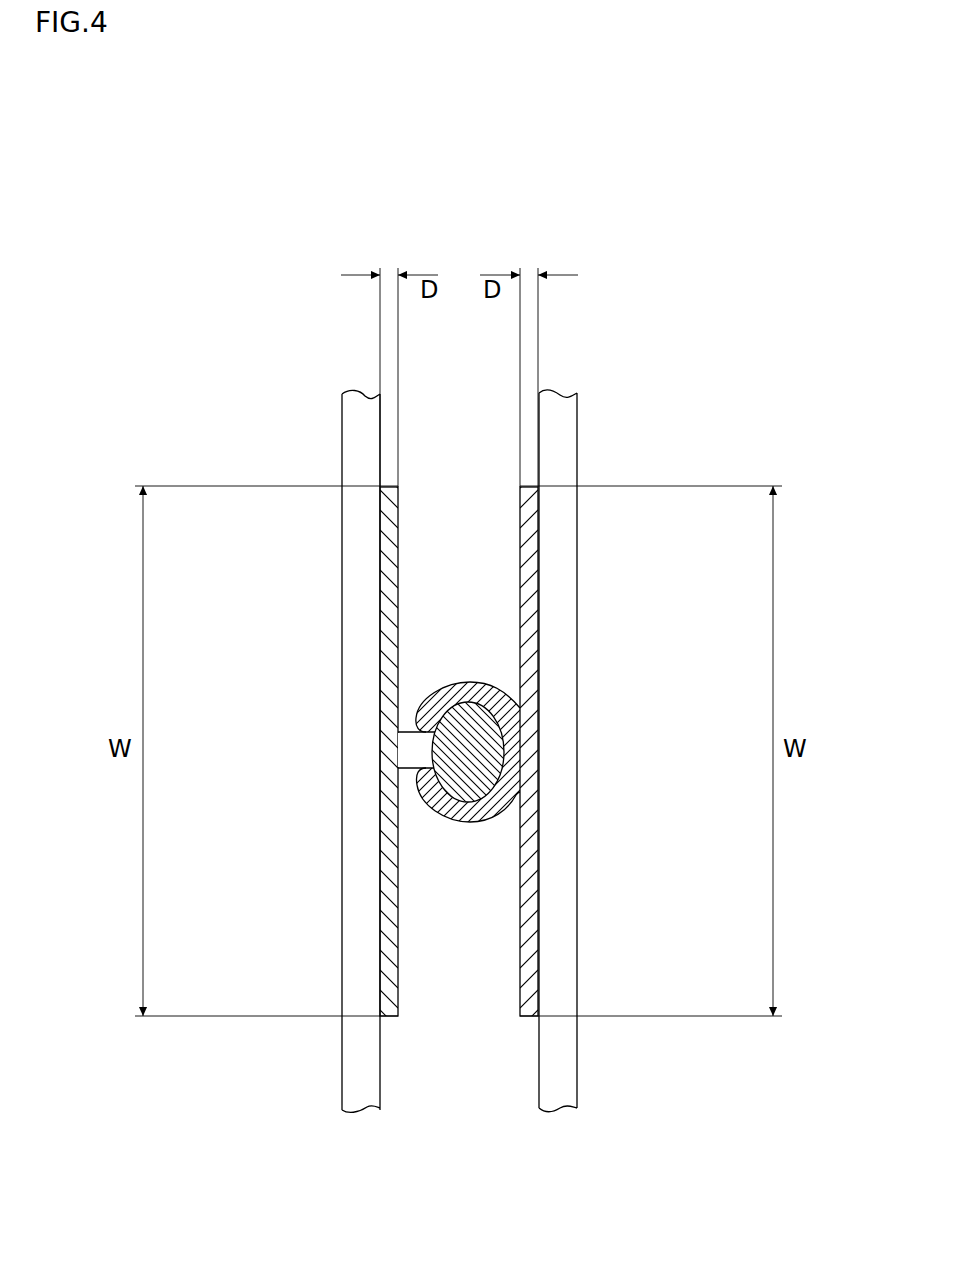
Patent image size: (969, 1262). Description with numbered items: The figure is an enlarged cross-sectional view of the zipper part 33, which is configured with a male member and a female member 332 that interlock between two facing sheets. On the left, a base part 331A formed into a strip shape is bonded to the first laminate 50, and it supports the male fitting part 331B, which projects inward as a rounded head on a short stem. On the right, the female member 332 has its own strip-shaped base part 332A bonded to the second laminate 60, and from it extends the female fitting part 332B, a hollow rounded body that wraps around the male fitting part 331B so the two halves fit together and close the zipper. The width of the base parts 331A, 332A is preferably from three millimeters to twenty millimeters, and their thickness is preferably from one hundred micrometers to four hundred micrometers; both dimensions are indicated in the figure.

The zipper part 33 is at (622, 227).
The first laminate 50 is at (358, 378).
The second laminate 60 is at (562, 375).
The base part 331A is at (410, 828).
The male fitting part 331B is at (445, 735).
The female member 332 is at (680, 800).
The base part 332A is at (512, 858).
The female fitting part 332B is at (462, 820).